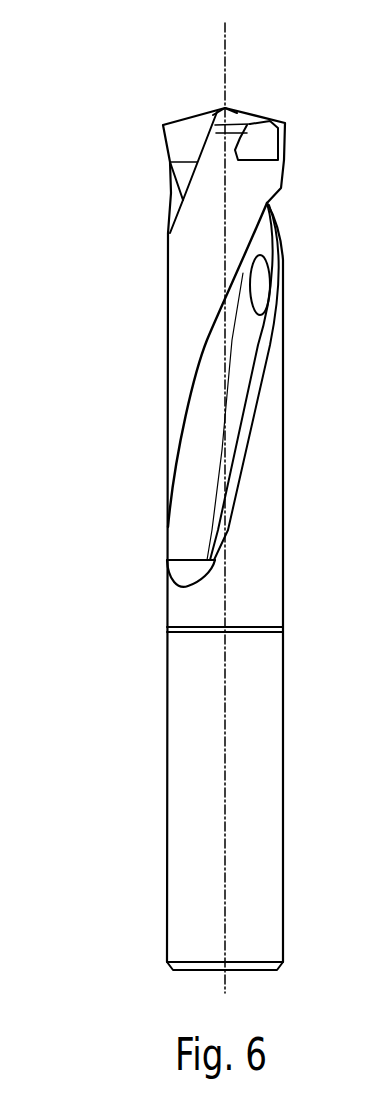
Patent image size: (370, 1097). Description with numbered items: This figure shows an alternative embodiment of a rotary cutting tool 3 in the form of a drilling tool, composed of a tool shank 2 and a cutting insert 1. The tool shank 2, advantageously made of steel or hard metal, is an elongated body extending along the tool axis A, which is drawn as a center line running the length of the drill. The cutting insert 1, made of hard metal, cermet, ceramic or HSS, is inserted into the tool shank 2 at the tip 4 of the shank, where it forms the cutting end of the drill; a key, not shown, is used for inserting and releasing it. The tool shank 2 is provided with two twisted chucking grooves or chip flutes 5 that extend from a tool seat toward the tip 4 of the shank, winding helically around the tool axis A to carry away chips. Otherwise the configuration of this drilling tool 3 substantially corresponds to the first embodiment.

The cutting insert 1 is at (263, 117).
The tool shank 2 is at (283, 533).
The rotary cutting tool 3 is at (128, 418).
The tip 4 is at (202, 75).
The chip flutes 5 is at (255, 343).
The tool axis A is at (227, 27).